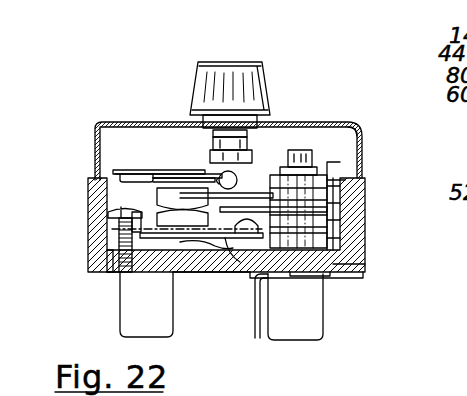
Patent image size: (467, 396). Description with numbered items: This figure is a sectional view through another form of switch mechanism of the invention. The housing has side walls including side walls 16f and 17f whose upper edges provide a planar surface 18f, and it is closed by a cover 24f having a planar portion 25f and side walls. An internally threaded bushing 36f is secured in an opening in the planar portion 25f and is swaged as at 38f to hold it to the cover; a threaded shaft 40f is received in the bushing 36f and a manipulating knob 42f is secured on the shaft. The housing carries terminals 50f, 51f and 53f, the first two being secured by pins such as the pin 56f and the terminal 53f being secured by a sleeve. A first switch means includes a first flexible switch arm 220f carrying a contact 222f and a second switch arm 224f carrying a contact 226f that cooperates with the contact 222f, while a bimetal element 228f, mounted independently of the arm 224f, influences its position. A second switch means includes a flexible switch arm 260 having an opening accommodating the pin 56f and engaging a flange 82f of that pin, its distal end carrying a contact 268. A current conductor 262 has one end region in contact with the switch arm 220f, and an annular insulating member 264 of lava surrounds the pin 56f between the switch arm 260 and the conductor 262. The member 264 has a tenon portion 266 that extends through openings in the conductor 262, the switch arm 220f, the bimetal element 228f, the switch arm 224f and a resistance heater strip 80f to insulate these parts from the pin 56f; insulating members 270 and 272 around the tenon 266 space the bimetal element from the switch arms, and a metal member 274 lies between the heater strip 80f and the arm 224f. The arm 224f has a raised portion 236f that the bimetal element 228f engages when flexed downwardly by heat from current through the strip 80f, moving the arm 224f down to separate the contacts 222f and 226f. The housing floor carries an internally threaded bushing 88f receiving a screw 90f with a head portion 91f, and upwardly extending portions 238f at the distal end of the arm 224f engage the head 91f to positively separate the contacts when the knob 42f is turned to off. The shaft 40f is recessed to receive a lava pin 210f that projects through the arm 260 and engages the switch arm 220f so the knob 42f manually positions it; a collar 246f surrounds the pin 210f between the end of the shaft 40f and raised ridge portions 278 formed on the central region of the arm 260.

The cover 24f is at (93, 130).
The side wall 16f is at (333, 243).
The metal member 274 is at (357, 258).
The tenon portion 266 is at (373, 263).
The terminal 53f is at (120, 323).
The terminal 50f is at (255, 338).
The terminal 51f is at (300, 340).
The manipulating knob 42f is at (192, 84).
The internally threaded bushing 36f is at (232, 120).
The swaged portion 38f is at (205, 128).
The threaded shaft 40f is at (213, 162).
The annular member or collar 246f is at (217, 140).
The raised ridge portions 278 is at (220, 180).
The switch arm 260 is at (133, 173).
The contact 268 is at (131, 180).
The lava pin 210f is at (153, 160).
The contact 222f is at (120, 180).
The contact 226f is at (157, 190).
The side wall 17f is at (157, 200).
The upwardly extending portions 238f is at (125, 226).
The head portion 91f is at (122, 213).
The threaded member or screw 90f is at (120, 245).
The internally threaded bushing 88f is at (118, 260).
The first flexible switch arm 220f is at (260, 210).
The planar portion 25f is at (247, 222).
The thermoresponsive or bimetal element 228f is at (273, 193).
The raised portion 236f is at (312, 152).
The pin 56f is at (360, 131).
The flange 82f is at (340, 155).
The annular insulating member 264 is at (340, 180).
The planar surface 18f is at (328, 188).
The current conductor 262 is at (328, 203).
The insulating member 270 is at (328, 220).
The insulating member 272 is at (328, 238).
The resistance heater element or strip 80f is at (232, 262).
The second switch arm 224f is at (237, 260).